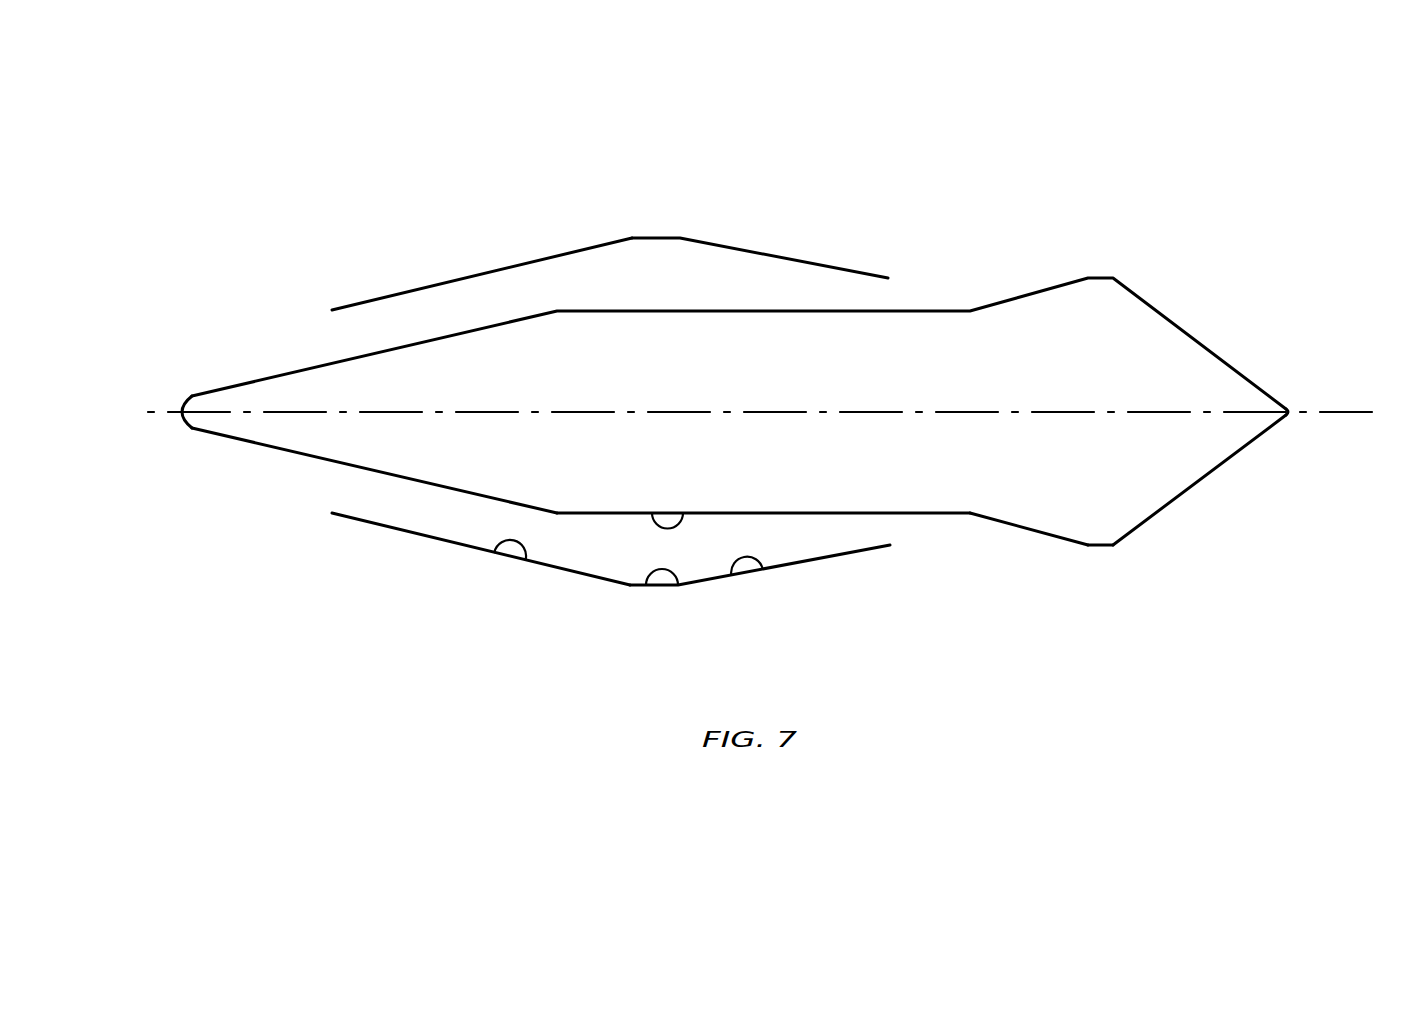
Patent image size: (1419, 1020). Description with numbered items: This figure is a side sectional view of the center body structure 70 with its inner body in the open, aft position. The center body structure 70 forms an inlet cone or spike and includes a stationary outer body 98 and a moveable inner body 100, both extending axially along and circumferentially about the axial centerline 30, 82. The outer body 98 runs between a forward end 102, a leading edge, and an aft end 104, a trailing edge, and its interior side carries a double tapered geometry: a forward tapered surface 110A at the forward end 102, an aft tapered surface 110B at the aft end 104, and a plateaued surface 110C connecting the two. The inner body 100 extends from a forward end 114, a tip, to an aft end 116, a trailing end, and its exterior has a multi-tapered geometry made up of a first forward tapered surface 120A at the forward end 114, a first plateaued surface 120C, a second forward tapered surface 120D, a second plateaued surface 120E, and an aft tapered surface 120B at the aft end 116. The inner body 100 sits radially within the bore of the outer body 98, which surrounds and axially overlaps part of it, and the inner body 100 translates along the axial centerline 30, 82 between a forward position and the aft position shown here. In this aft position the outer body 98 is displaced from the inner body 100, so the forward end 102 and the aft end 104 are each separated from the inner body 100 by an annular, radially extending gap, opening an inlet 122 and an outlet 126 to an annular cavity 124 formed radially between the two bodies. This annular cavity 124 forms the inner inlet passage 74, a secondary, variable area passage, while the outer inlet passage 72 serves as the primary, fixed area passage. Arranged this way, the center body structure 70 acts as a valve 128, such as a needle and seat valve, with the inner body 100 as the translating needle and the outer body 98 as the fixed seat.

The axial centerline 30 is at (756, 459).
The axial centerline 82 is at (1363, 413).
The center body structure 70 is at (741, 394).
The valve 128 is at (995, 207).
The outer inlet passage 72 is at (634, 178).
The inner inlet passage 74 is at (558, 577).
The annular cavity 124 is at (558, 577).
The outer body 98 is at (610, 249).
The inner body 100 is at (307, 370).
The forward end of the outer body 102 is at (332, 310).
The aft end of the outer body 104 is at (888, 278).
The forward tapered surface 110A is at (528, 561).
The aft tapered surface 110B is at (740, 576).
The plateaued surface 110C is at (673, 585).
The forward end of the inner body 114 is at (178, 413).
The aft end of the inner body 116 is at (1291, 408).
The first forward tapered surface 120A is at (337, 458).
The aft tapered surface 120B is at (1198, 485).
The first plateaued surface 120C is at (683, 513).
The second forward tapered surface 120D is at (1027, 530).
The second plateaued surface 120E is at (1110, 547).
The inlet 122 is at (330, 512).
The outlet 126 is at (885, 528).